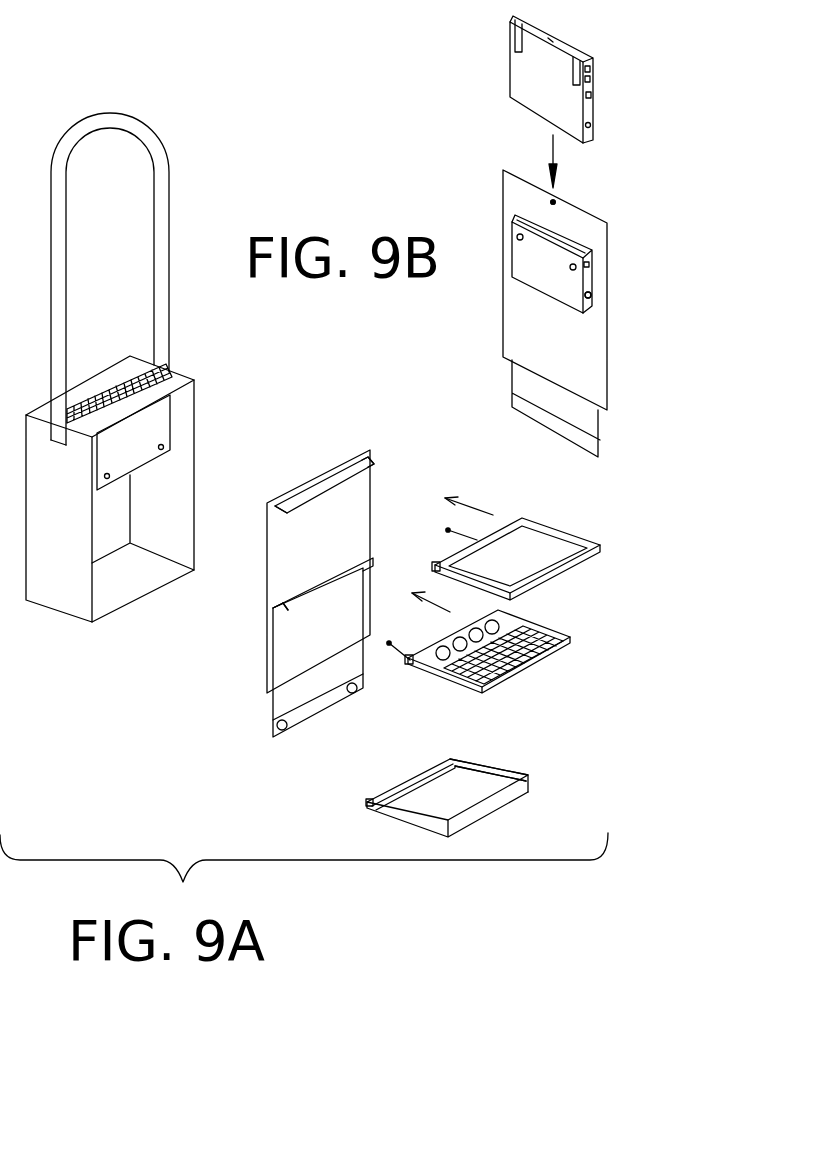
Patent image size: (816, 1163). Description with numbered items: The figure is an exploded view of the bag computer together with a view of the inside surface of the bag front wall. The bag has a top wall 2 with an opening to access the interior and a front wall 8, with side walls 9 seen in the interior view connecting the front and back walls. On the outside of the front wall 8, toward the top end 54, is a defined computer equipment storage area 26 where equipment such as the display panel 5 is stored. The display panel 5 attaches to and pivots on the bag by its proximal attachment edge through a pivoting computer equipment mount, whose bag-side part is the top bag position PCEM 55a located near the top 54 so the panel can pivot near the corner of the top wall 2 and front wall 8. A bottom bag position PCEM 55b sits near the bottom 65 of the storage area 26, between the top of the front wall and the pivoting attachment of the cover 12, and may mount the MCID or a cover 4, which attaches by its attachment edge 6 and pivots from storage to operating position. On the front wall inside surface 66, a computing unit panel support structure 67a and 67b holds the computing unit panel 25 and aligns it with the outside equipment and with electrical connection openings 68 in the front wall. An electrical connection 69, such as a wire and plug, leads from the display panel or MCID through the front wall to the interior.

In FIG. 9A, the top wall 2 is at (163, 387).
In FIG. 9A, the cover 4 is at (497, 765).
In FIG. 9A, the display panel 5 is at (570, 525).
In FIG. 9A, the attachment edge 6 is at (395, 782).
In FIG. 9A, the front wall 8 is at (267, 550).
In FIG. 9A, the side walls (interior view) 9 is at (106, 523).
In FIG. 9A, the pivoting attachment of the cover 12 is at (285, 610).
In FIG. 9B, the computing unit panel 25 is at (532, 87).
In FIG. 9A, the computer equipment storage area 26 is at (318, 543).
In FIG. 9A, the top end of the front wall 54 is at (328, 473).
In FIG. 9A, the top bag position PCEM 55a is at (350, 470).
In FIG. 9A, the bottom bag position PCEM 55b is at (325, 583).
In FIG. 9A, the bottom of the computer equipment storage area 65 is at (290, 592).
In FIG. 9B, the front wall inside surface 66 is at (580, 350).
In FIG. 9B, the computing unit panel support structure 67a is at (533, 260).
In FIG. 9A, the computing unit panel support structure 67b is at (140, 436).
In FIG. 9B, the electrical connection openings 68 is at (590, 293).
In FIG. 9A, the electrical connection 69 is at (389, 643).